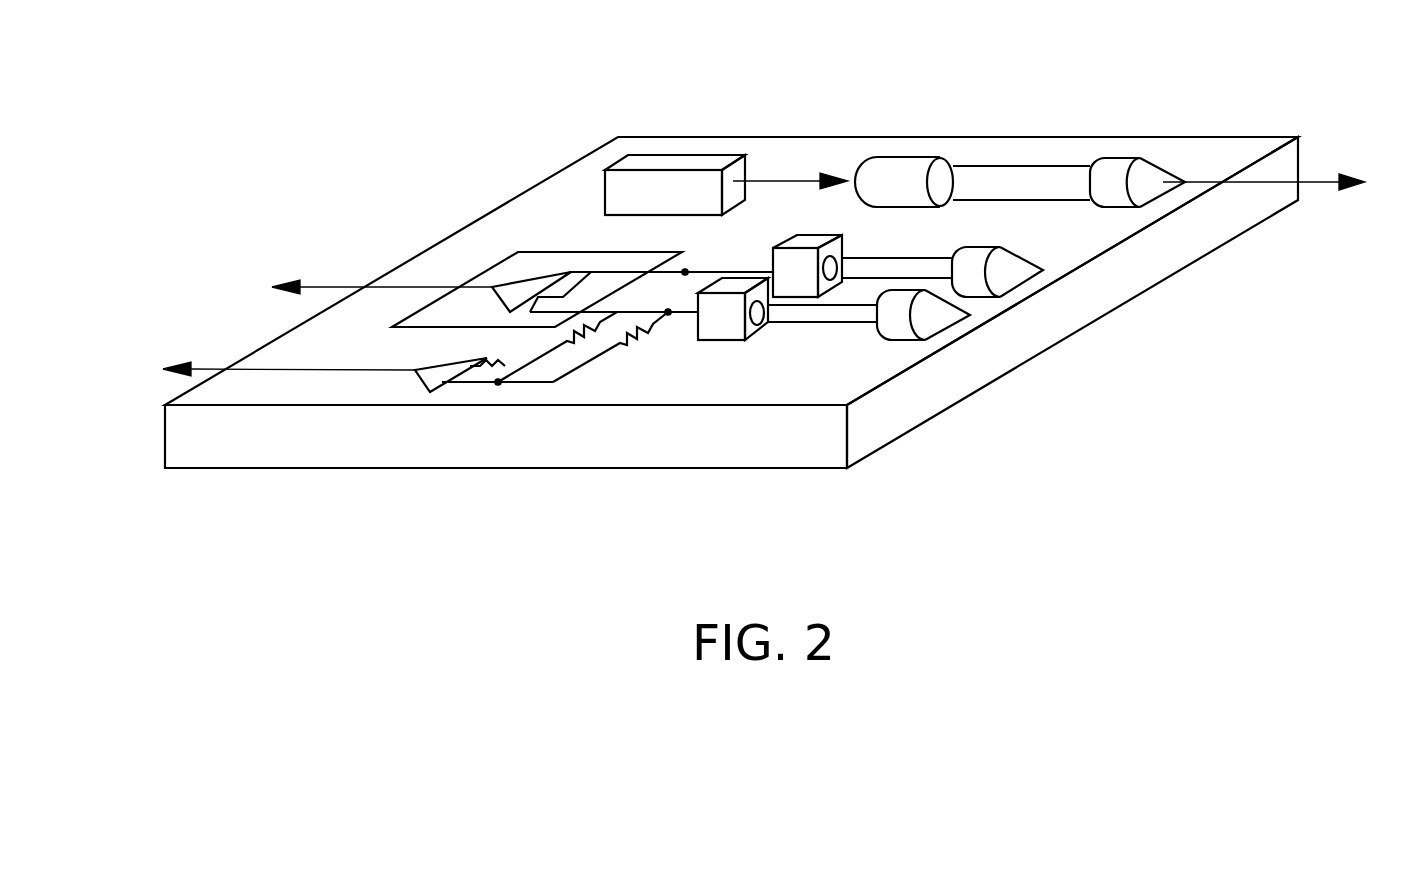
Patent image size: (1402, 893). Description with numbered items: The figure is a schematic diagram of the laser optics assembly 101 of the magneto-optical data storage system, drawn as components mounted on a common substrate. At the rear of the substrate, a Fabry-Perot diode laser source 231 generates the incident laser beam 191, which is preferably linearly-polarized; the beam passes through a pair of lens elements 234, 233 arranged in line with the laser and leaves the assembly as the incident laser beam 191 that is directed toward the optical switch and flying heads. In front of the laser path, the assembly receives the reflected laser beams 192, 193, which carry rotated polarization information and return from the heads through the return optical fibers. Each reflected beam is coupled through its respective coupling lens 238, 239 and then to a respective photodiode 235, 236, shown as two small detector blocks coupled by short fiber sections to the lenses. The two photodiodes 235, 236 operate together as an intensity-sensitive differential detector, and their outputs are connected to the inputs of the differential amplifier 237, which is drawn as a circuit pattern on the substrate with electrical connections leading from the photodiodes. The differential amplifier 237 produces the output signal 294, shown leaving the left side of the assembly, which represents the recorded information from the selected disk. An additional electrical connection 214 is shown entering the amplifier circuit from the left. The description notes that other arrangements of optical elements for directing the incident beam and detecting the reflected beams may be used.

The laser optics assembly 101 is at (447, 168).
The Fabry-Perot diode laser source 231 is at (699, 153).
The collimating lens 234 is at (925, 157).
The focusing lens 233 is at (1150, 157).
The incident laser beam 191 is at (1352, 168).
The coupling lens 238 is at (1035, 257).
The reflected laser beam 192 is at (1064, 271).
The reflected laser beam 193 is at (985, 317).
The coupling lens 239 is at (958, 327).
The photodiode 235 is at (808, 313).
The photodiode 236 is at (756, 356).
The differential amplifier 237 is at (517, 329).
The output signal 294 is at (349, 287).
The input electrical signal 214 is at (301, 373).